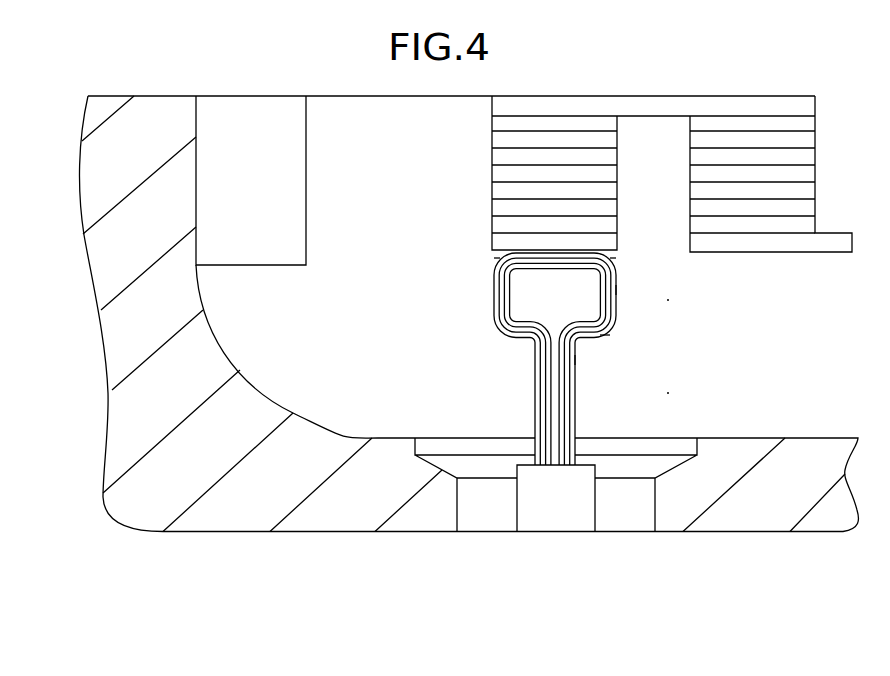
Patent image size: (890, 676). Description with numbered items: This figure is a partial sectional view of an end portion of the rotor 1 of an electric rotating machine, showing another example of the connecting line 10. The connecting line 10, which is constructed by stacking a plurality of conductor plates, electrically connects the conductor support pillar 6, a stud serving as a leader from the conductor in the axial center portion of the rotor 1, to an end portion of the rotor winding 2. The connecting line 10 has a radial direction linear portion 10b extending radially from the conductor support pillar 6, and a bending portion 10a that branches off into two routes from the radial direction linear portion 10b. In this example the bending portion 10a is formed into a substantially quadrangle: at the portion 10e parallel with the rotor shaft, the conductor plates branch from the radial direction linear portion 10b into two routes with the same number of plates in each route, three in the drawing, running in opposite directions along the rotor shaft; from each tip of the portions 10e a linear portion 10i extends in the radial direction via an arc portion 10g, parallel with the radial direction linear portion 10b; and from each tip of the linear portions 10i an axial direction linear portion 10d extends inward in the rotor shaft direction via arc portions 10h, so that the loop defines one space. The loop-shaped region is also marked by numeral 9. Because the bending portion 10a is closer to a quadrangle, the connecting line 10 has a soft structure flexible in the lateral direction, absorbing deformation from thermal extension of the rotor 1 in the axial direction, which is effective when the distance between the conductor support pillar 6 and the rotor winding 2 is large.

The rotor 1 is at (128, 248).
The rotor winding 2 is at (520, 128).
The conductor support pillar 6 is at (543, 515).
The loop portion 9 is at (492, 307).
The connecting line 10 is at (574, 339).
The bending portion 10a is at (667, 260).
The radial direction linear portion 10b is at (667, 347).
The axial direction linear portion 10d is at (492, 258).
The portion parallel with the rotor shaft 10e is at (583, 358).
The arc portion 10g is at (607, 335).
The arc portion 10h is at (613, 258).
The linear portion 10i is at (617, 291).